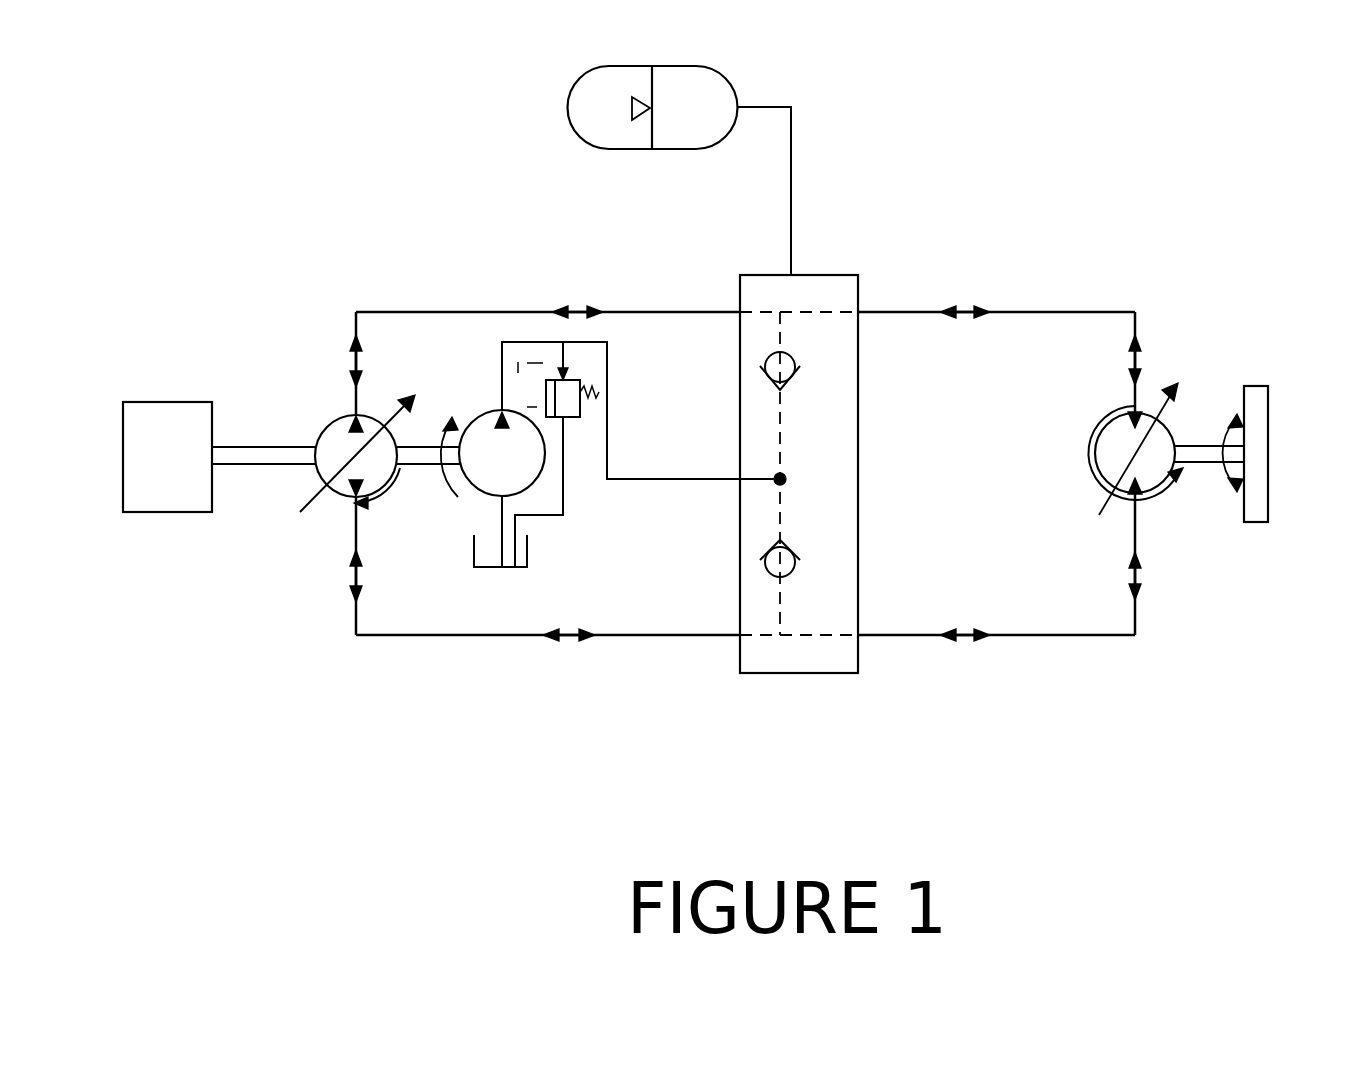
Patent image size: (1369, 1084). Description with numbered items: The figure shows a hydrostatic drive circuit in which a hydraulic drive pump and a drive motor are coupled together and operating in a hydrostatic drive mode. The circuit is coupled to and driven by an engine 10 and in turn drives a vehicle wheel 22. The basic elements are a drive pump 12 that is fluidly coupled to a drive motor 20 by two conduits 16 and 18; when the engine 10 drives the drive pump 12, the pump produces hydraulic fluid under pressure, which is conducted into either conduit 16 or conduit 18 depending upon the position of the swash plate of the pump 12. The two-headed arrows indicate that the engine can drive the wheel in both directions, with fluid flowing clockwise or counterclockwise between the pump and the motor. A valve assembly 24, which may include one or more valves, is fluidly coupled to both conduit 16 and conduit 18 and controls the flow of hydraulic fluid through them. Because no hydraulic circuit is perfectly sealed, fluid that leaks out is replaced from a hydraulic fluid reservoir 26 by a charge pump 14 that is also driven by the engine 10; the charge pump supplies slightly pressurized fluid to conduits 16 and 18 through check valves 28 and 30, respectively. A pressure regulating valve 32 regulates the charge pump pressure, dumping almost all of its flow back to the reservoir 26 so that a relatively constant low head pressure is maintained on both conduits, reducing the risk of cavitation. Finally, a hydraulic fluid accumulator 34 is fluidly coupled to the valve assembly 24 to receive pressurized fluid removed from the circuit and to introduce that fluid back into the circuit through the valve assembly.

The engine 10 is at (167, 402).
The drive pump 12 is at (373, 427).
The charge pump 14 is at (520, 407).
The conduit 16 is at (463, 310).
The conduit 18 is at (432, 635).
The drive motor 20 is at (1094, 443).
The vehicle wheel 22 is at (1266, 385).
The valve assembly 24 is at (823, 275).
The hydraulic fluid reservoir 26 is at (507, 567).
The check valve 28 is at (792, 378).
The check valve 30 is at (800, 557).
The pressure regulating valve 32 is at (572, 380).
The hydraulic fluid accumulator 34 is at (568, 103).